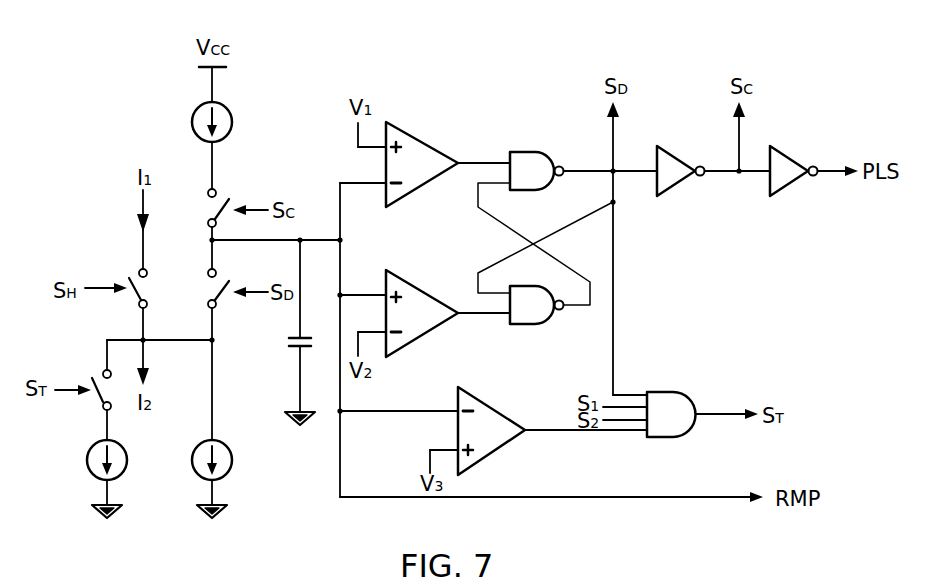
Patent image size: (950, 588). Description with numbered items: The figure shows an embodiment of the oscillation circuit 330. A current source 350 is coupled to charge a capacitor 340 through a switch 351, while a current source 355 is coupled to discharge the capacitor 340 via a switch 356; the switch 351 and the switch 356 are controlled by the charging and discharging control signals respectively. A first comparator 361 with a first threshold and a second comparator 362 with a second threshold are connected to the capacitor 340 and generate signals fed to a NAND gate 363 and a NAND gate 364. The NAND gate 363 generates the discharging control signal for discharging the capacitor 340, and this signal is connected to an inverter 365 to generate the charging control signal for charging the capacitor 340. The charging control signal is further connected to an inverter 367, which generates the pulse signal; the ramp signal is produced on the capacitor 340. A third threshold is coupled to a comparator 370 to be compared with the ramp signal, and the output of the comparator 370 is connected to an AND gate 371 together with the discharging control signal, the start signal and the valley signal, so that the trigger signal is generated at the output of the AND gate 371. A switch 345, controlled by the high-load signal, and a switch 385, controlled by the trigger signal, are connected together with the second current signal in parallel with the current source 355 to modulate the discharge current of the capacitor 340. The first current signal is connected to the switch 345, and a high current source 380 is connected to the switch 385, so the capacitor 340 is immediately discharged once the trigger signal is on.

The oscillation circuit 330 is at (884, 52).
The capacitor 340 is at (284, 332).
The switch 345 is at (118, 282).
The current source 350 is at (237, 122).
The switch 351 is at (237, 201).
The current source 355 is at (186, 460).
The switch 356 is at (237, 282).
The comparator 361 is at (403, 164).
The comparator 362 is at (403, 313).
The NAND gate 363 is at (537, 159).
The NAND gate 364 is at (537, 320).
The inverter 365 is at (684, 163).
The inverter 367 is at (798, 163).
The comparator 370 is at (438, 430).
The AND gate 371 is at (649, 401).
The current source 380 is at (81, 460).
The switch 385 is at (84, 396).